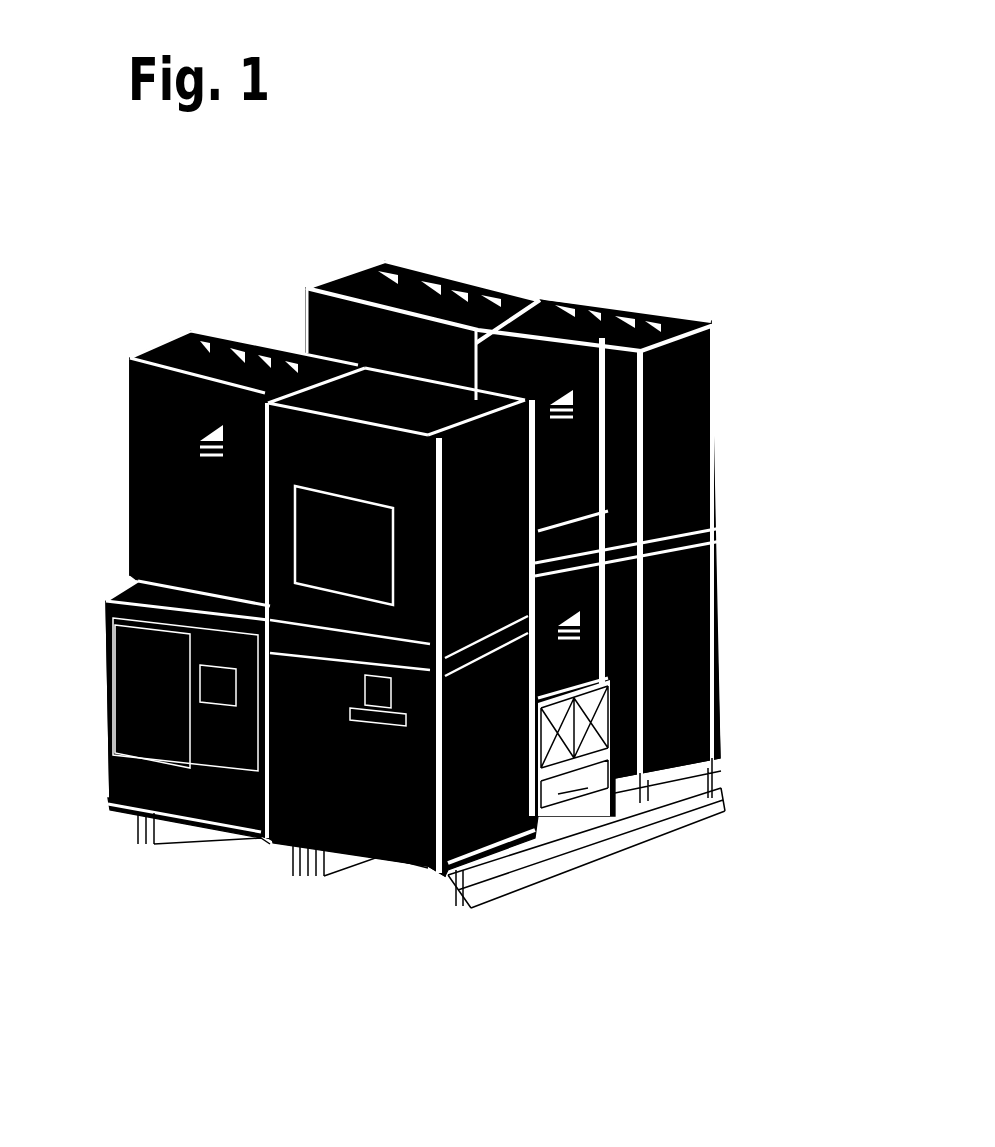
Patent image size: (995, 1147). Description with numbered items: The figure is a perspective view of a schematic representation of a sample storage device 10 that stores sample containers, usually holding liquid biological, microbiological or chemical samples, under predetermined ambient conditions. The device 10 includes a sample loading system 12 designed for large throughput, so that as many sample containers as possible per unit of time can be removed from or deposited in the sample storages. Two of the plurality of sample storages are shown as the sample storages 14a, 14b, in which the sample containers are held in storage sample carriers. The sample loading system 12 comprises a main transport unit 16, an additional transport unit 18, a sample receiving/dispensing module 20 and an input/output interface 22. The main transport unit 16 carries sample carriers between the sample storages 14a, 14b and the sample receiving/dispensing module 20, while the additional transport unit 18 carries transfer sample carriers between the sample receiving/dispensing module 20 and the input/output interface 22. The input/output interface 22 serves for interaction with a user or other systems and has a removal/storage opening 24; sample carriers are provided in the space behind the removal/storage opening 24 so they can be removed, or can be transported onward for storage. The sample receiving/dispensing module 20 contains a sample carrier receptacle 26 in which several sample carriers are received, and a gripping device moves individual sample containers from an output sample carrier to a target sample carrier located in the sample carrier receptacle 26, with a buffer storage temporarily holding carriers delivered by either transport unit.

The sample storage device 10 is at (615, 112).
The sample loading system 12 is at (125, 295).
The sample storage 14a is at (392, 265).
The sample storage 14b is at (635, 310).
The main transport unit 16 is at (590, 442).
The additional transport unit 18 is at (385, 857).
The sample receiving/dispensing module 20 is at (122, 480).
The input/output interface 22 is at (118, 803).
The removal/storage opening 24 is at (98, 668).
The sample carrier receptacle 26 is at (270, 832).